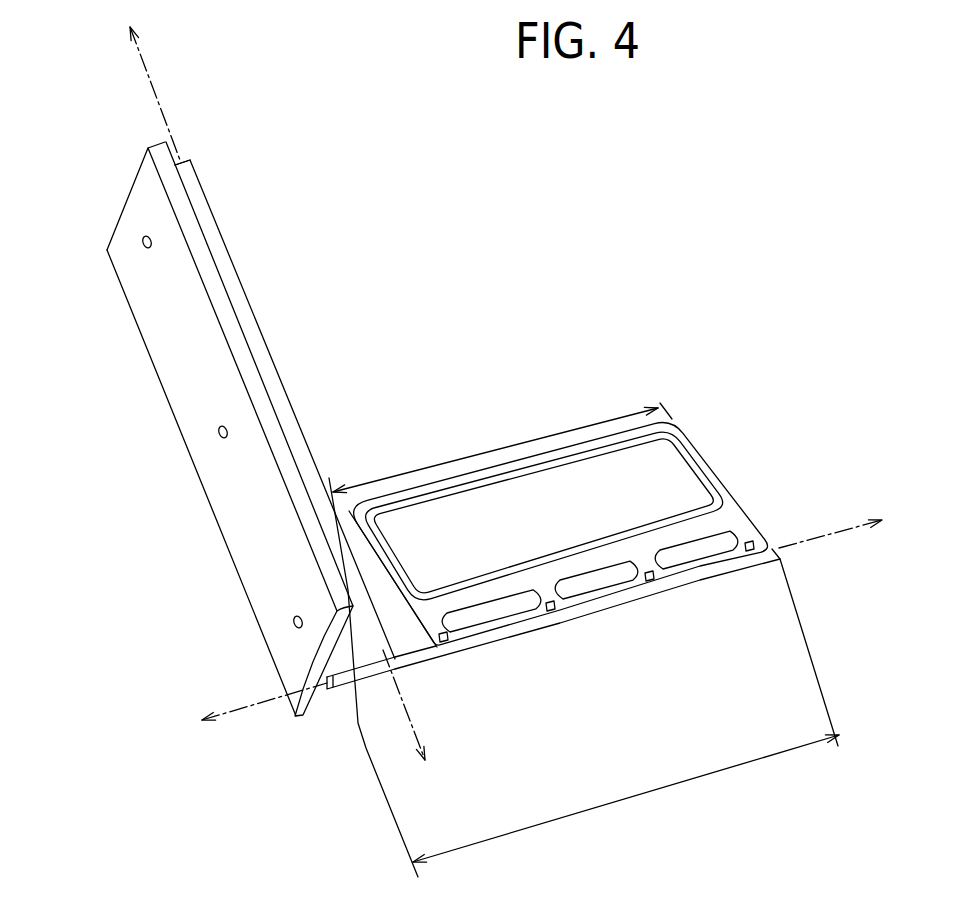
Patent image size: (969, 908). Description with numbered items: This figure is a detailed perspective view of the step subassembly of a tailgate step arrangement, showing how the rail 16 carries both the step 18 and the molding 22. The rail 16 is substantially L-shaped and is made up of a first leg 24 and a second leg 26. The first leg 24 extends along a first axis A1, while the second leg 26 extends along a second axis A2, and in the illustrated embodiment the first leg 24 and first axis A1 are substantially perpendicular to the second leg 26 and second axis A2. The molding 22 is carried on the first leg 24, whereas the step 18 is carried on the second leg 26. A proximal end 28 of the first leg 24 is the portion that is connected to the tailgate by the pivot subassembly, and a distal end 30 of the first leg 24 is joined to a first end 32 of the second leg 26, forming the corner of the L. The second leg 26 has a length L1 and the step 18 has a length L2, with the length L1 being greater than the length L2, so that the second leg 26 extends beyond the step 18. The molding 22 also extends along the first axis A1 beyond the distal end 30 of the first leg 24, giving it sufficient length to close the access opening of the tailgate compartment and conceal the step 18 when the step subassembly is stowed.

The rail 16 is at (354, 608).
The step 18 is at (663, 482).
The molding 22 is at (190, 372).
The first leg 24 is at (275, 387).
The second leg 26 is at (530, 630).
The proximal end 28 is at (188, 158).
The distal end 30 is at (370, 645).
The first end 32 is at (395, 660).
The first axis A1 is at (149, 80).
The second axis A2 is at (245, 703).
The length of the second leg L1 is at (622, 800).
The length of the step L2 is at (487, 452).